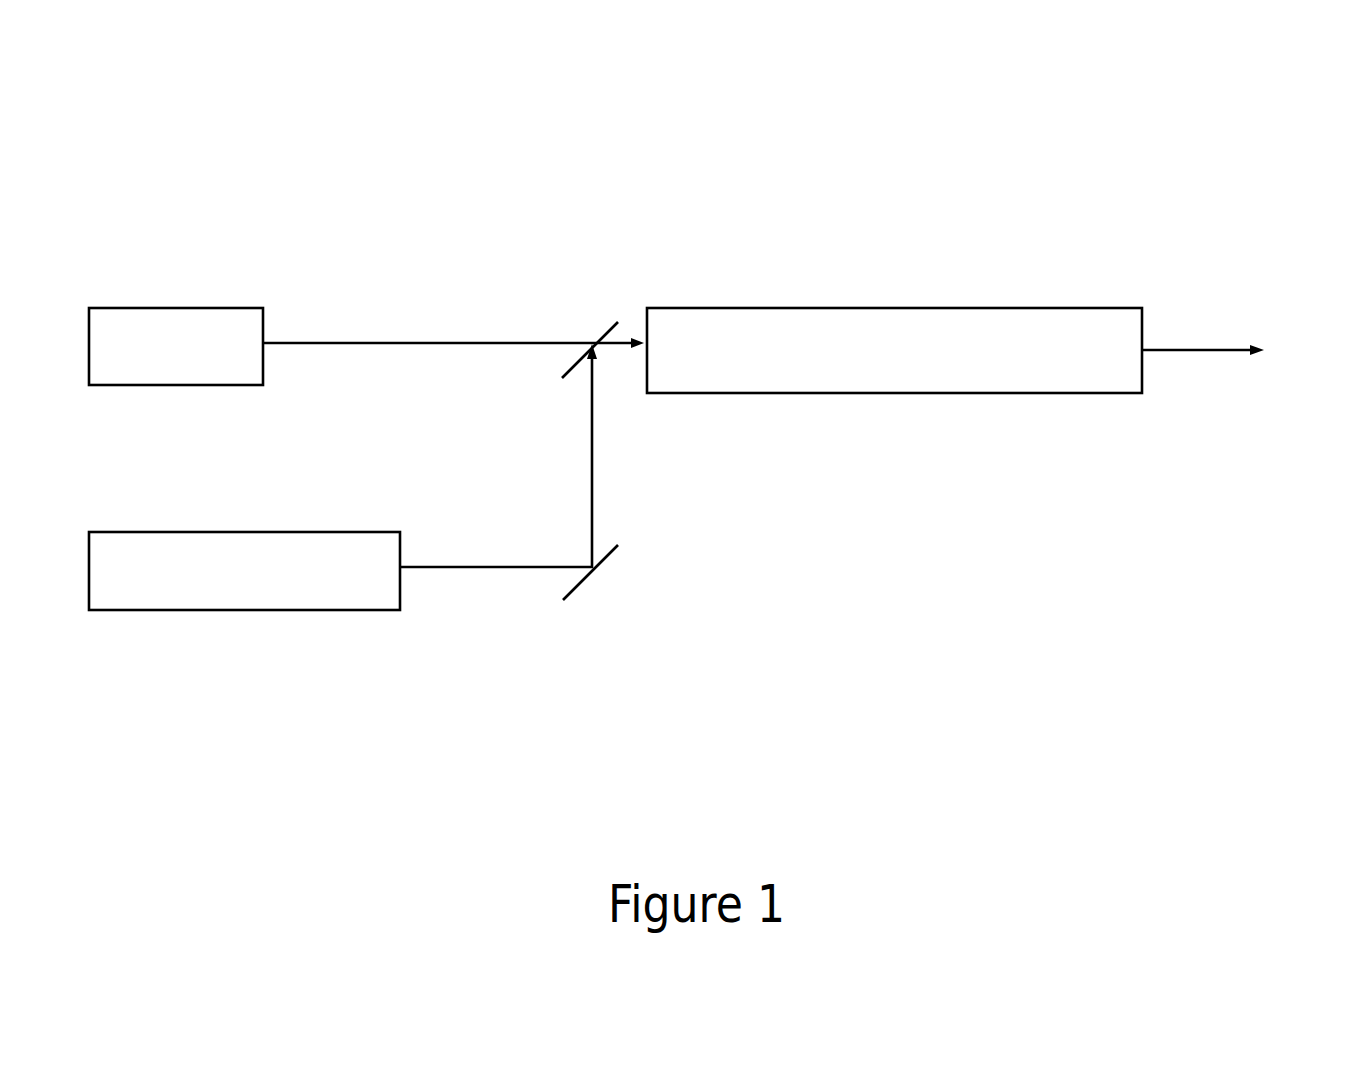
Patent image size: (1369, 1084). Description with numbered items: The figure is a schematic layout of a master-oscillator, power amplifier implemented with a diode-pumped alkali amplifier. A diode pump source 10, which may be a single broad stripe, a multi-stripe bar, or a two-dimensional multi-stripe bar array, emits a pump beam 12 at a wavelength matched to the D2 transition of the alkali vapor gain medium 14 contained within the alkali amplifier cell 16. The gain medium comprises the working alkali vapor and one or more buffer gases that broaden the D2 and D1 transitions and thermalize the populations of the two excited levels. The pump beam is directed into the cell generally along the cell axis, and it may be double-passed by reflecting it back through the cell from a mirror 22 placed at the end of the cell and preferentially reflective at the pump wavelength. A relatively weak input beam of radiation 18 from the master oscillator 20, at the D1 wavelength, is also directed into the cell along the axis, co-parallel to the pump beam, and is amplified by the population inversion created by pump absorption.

The diode pump source 10 is at (270, 610).
The pump beam 12 is at (508, 567).
The alkali vapor gain medium 14 is at (1002, 367).
The alkali amplifier cell 16 is at (913, 308).
The input beam of radiation 18 is at (408, 343).
The master oscillator 20 is at (175, 308).
The mirror 22 is at (1142, 330).